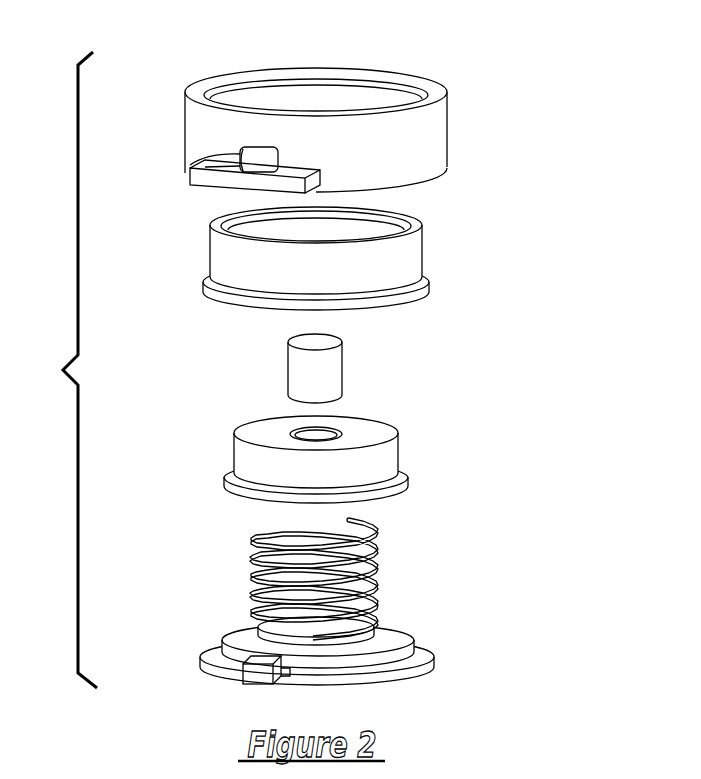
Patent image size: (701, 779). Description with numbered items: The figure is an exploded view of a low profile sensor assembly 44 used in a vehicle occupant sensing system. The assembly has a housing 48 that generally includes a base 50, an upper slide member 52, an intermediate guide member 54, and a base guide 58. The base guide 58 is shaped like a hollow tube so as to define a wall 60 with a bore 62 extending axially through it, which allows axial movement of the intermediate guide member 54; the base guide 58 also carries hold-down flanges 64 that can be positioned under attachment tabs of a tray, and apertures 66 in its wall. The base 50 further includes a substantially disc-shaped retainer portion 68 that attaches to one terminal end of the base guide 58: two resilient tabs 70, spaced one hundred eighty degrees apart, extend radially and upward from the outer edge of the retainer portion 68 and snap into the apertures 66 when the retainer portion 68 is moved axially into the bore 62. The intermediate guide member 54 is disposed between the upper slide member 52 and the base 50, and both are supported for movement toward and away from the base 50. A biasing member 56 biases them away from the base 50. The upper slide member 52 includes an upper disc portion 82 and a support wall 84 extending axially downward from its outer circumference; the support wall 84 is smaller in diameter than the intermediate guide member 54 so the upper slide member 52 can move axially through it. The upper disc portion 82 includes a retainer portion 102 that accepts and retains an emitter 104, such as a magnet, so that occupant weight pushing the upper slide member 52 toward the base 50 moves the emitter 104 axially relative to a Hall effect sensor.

The low profile sensor assembly 44 is at (56, 370).
The housing 48 is at (510, 307).
The base 50 is at (328, 661).
The upper slide member 52 is at (322, 446).
The intermediate guide member 54 is at (413, 255).
The biasing member 56 is at (385, 565).
The base guide 58 is at (353, 100).
The wall 60 is at (437, 155).
The bore 62 is at (303, 74).
The hold-down flanges 64 is at (205, 178).
The apertures 66 is at (190, 162).
The retainer portion 68 is at (375, 672).
The resilient tabs 70 is at (243, 660).
The upper disc portion 82 is at (370, 430).
The support wall 84 is at (250, 458).
The retainer portion 102 is at (312, 432).
The emitter 104 is at (337, 371).